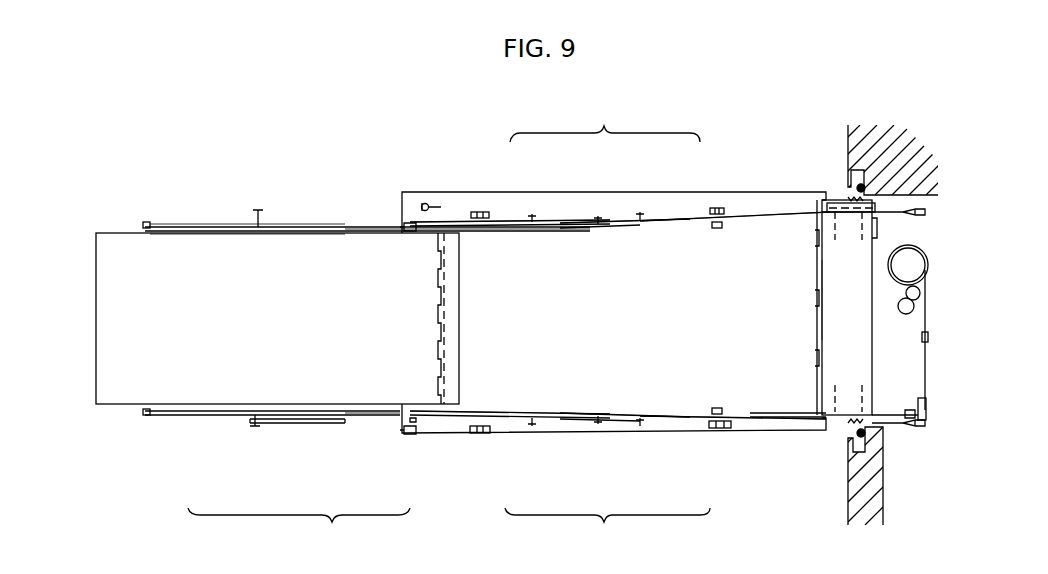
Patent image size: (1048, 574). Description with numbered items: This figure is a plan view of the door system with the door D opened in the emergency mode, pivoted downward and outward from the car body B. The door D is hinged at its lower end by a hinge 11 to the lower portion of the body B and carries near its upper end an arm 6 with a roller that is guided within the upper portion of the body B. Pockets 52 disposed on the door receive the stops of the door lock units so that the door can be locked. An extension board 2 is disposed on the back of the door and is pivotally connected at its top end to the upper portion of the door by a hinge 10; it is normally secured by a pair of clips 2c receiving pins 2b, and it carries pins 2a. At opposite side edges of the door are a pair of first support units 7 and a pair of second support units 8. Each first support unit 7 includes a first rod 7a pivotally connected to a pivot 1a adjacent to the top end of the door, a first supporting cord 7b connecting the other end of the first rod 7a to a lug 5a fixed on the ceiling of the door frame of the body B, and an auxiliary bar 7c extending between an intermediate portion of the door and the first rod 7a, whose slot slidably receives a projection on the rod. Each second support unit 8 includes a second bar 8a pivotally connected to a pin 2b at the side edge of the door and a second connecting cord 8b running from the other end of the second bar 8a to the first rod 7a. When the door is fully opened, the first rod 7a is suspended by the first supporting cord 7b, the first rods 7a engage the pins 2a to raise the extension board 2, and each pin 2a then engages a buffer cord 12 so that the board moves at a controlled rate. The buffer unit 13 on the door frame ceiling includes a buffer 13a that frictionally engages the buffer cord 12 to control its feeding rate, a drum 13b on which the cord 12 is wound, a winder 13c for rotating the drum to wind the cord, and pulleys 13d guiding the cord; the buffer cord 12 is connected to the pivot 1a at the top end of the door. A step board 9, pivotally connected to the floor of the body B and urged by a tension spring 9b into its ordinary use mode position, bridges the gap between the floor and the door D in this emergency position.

The extension board 2 is at (283, 345).
The pin 2a is at (262, 211).
The pin 2b is at (147, 222).
The clip 2c is at (717, 229).
The pivot 1a is at (412, 223).
The lug 5a is at (920, 195).
The arm 6 is at (432, 207).
The first support unit 7 is at (620, 330).
The first rod 7a is at (510, 222).
The first supporting cord 7b is at (686, 218).
The auxiliary bar 7c is at (580, 222).
The second support unit 8 is at (367, 394).
The second bar 8a is at (207, 227).
The second connecting cord 8b is at (503, 233).
The step board 9 is at (843, 256).
The tension spring 9b is at (852, 190).
The hinge 10 is at (445, 325).
The hinge 11 is at (822, 296).
The buffer cord 12 is at (335, 423).
The buffer unit 13 is at (1033, 311).
The buffer 13a is at (928, 415).
The drum 13b is at (912, 265).
The winder 13c is at (912, 306).
The pulleys 13d is at (928, 340).
The pocket 52 is at (480, 212).
The car body B is at (880, 510).
The door D is at (635, 337).